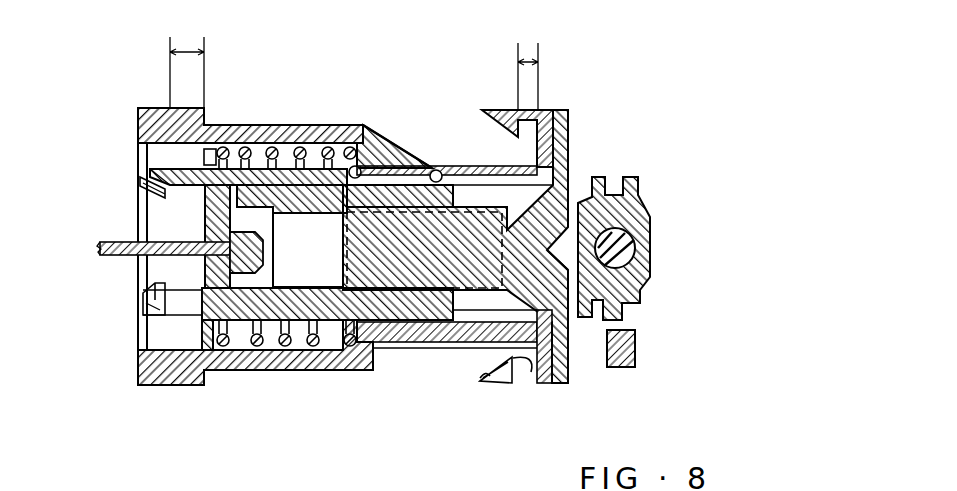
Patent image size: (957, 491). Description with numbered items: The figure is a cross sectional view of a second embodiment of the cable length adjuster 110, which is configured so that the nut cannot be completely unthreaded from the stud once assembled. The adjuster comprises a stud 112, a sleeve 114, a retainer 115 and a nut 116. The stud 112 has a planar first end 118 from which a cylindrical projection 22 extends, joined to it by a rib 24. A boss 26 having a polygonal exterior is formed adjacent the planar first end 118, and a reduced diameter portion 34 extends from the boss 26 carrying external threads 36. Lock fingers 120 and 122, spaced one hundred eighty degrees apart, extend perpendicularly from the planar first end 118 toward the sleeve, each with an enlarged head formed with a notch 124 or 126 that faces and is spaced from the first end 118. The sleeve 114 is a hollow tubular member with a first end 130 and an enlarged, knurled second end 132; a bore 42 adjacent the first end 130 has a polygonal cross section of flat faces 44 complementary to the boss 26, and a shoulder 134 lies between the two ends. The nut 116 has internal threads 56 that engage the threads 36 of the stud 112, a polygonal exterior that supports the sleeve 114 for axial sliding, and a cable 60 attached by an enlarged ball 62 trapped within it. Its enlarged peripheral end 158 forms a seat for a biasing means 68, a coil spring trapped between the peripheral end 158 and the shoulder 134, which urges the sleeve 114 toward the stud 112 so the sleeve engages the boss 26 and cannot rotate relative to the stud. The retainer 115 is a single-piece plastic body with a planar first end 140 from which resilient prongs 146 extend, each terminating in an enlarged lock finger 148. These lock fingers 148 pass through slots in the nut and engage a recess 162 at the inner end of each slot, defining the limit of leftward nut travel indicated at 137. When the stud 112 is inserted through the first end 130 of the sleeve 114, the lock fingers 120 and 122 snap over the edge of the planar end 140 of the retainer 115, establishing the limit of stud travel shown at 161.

The cylindrical projection 22 is at (612, 250).
The rib 24 is at (583, 235).
The boss 26 is at (573, 230).
The reduced diameter portion 34 is at (393, 215).
The threads 36 is at (392, 280).
The bore 42 is at (436, 170).
The flat faces 44 is at (314, 486).
The internal threads 56 is at (283, 286).
The cable 60 is at (100, 248).
The ball 62 is at (235, 233).
The biasing means 68 is at (260, 150).
The cable length adjuster 110 is at (380, 6).
The stud 112 is at (566, 265).
The sleeve 114 is at (258, 373).
The retainer 115 is at (175, 173).
The nut 116 is at (324, 200).
The planar first end 118 is at (566, 386).
The lock finger 120 is at (498, 108).
The lock finger 122 is at (486, 379).
The notch 124 is at (517, 137).
The notch 126 is at (528, 373).
The first end 130 is at (514, 164).
The second end 132 is at (155, 112).
The shoulder 134 is at (382, 141).
The limit of travel 137 is at (185, 48).
The first end 140 is at (549, 295).
The prongs 146 is at (165, 190).
The lock finger 148 is at (147, 190).
The peripheral end 158 is at (210, 156).
The limit of travel 161 is at (525, 58).
The recess 162 is at (230, 195).